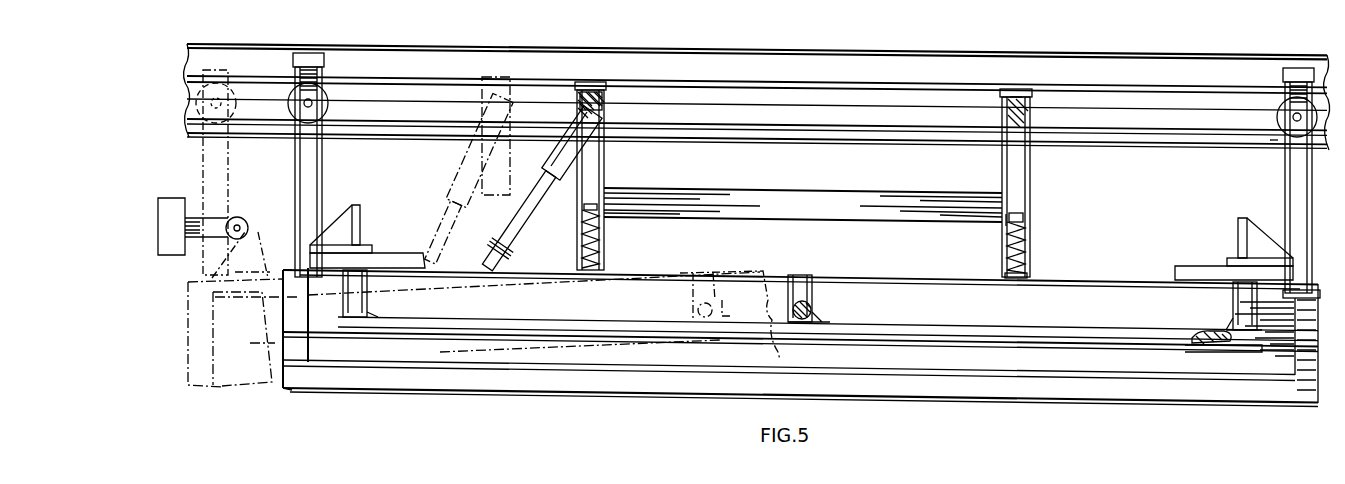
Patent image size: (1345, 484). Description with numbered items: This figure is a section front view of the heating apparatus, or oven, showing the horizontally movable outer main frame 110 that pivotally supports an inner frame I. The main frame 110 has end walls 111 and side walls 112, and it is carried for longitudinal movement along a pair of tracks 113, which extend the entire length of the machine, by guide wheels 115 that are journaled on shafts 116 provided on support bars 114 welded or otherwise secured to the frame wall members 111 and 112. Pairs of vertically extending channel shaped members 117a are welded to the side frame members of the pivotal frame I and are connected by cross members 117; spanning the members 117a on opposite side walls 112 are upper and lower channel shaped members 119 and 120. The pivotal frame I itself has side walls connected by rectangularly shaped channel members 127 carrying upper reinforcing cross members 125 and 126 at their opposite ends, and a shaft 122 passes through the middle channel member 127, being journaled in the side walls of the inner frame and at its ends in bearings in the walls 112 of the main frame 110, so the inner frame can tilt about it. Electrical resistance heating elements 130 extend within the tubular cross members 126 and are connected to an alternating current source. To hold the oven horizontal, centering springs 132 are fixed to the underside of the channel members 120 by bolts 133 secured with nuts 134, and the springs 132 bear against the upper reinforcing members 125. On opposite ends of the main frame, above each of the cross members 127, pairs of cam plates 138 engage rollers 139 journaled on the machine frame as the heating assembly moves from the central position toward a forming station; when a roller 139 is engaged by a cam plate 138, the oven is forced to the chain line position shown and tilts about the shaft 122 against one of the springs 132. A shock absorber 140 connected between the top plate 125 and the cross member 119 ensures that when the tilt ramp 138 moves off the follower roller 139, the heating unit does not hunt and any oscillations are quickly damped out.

The main frame 110 is at (276, 373).
The end walls 111 is at (1295, 380).
The side walls 112 is at (1166, 394).
The tracks 113 is at (1232, 134).
The support bars 114 is at (322, 150).
The guide wheels 115 is at (330, 104).
The shafts 116 is at (1278, 141).
The cross members 117 is at (784, 196).
The channel shaped members 117a is at (604, 158).
The upper channel shaped member 119 is at (604, 90).
The lower channel shaped member 120 is at (600, 228).
The shaft 122 is at (815, 307).
The upper reinforcing cross members 125 is at (1078, 278).
The tubular cross members 126 is at (1050, 333).
The channel members 127 is at (812, 292).
The electrical resistance heating elements 130 is at (1192, 340).
The centering springs 132 is at (1028, 240).
The bolts 133 is at (1012, 283).
The nuts 134 is at (1022, 216).
The cam plates 138 is at (352, 210).
The rollers 139 is at (238, 218).
The shock absorber 140 is at (532, 209).
The inner frame I is at (981, 353).